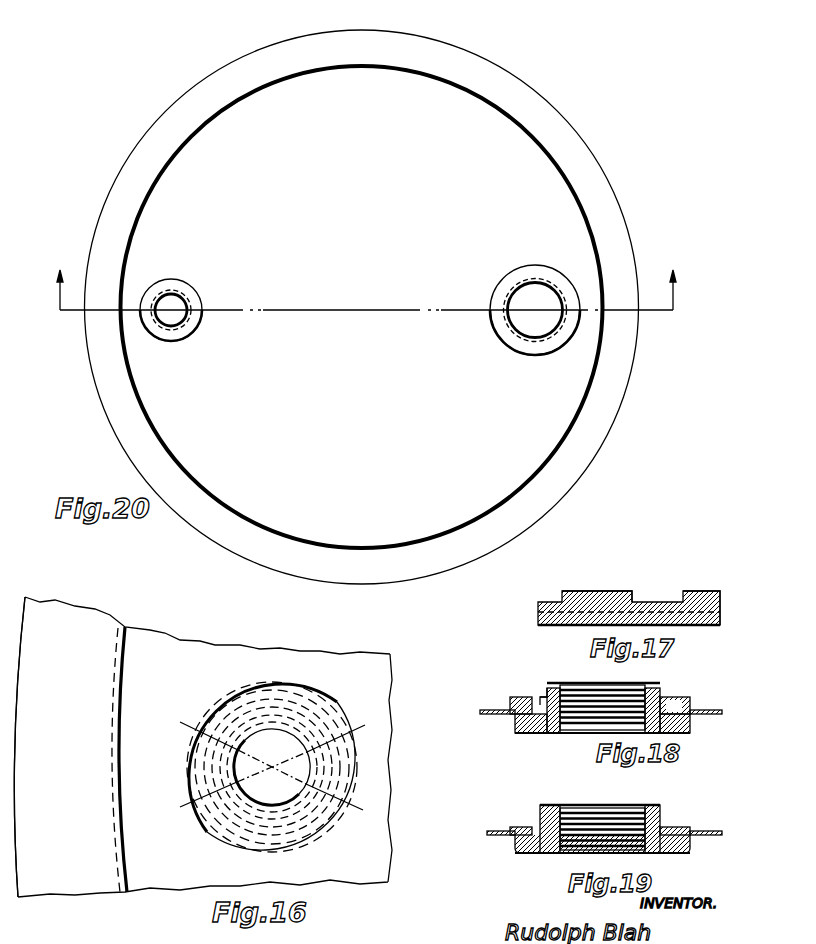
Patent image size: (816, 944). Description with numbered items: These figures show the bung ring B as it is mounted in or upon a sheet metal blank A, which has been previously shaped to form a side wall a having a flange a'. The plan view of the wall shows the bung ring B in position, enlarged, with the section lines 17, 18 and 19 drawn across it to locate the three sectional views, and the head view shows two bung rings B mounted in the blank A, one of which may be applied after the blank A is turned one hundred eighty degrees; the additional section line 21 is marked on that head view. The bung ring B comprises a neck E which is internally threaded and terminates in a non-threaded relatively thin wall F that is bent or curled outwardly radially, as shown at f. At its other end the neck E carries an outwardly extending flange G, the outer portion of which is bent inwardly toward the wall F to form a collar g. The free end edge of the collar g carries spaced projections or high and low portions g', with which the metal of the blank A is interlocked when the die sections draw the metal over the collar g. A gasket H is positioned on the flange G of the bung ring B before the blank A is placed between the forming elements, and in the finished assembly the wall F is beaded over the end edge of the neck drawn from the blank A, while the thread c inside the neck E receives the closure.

In FIG. 20, the flange a' is at (352, 307).
In FIG. 16, the flange a' is at (42, 742).
In FIG. 20, the blank A is at (362, 307).
In FIG. 16, the blank A is at (167, 650).
In FIG. 18, the blank A is at (498, 710).
In FIG. 16, the side wall a is at (135, 759).
In FIG. 20, the bung ring B is at (186, 328).
In FIG. 18, the bung ring B is at (594, 721).
In FIG. 20, the section line 21- 21 is at (358, 303).
In FIG. 16, the section line 17— 17 is at (272, 769).
In FIG. 16, the section line 18— 18 is at (270, 771).
In FIG. 16, the section line 19— 19 is at (272, 770).
In FIG. 17, the collar g is at (608, 608).
In FIG. 18, the collar g is at (580, 726).
In FIG. 17, the high and low portions g' is at (641, 606).
In FIG. 18, the flange G is at (522, 735).
In FIG. 18, the gasket H is at (690, 726).
In FIG. 19, the gasket H is at (525, 848).
In FIG. 18, the thin wall F is at (545, 688).
In FIG. 18, the curled portion f is at (547, 695).
In FIG. 19, the curled portion f is at (660, 818).
In FIG. 18, the neck E is at (556, 690).
In FIG. 18, the threaded core c is at (566, 730).